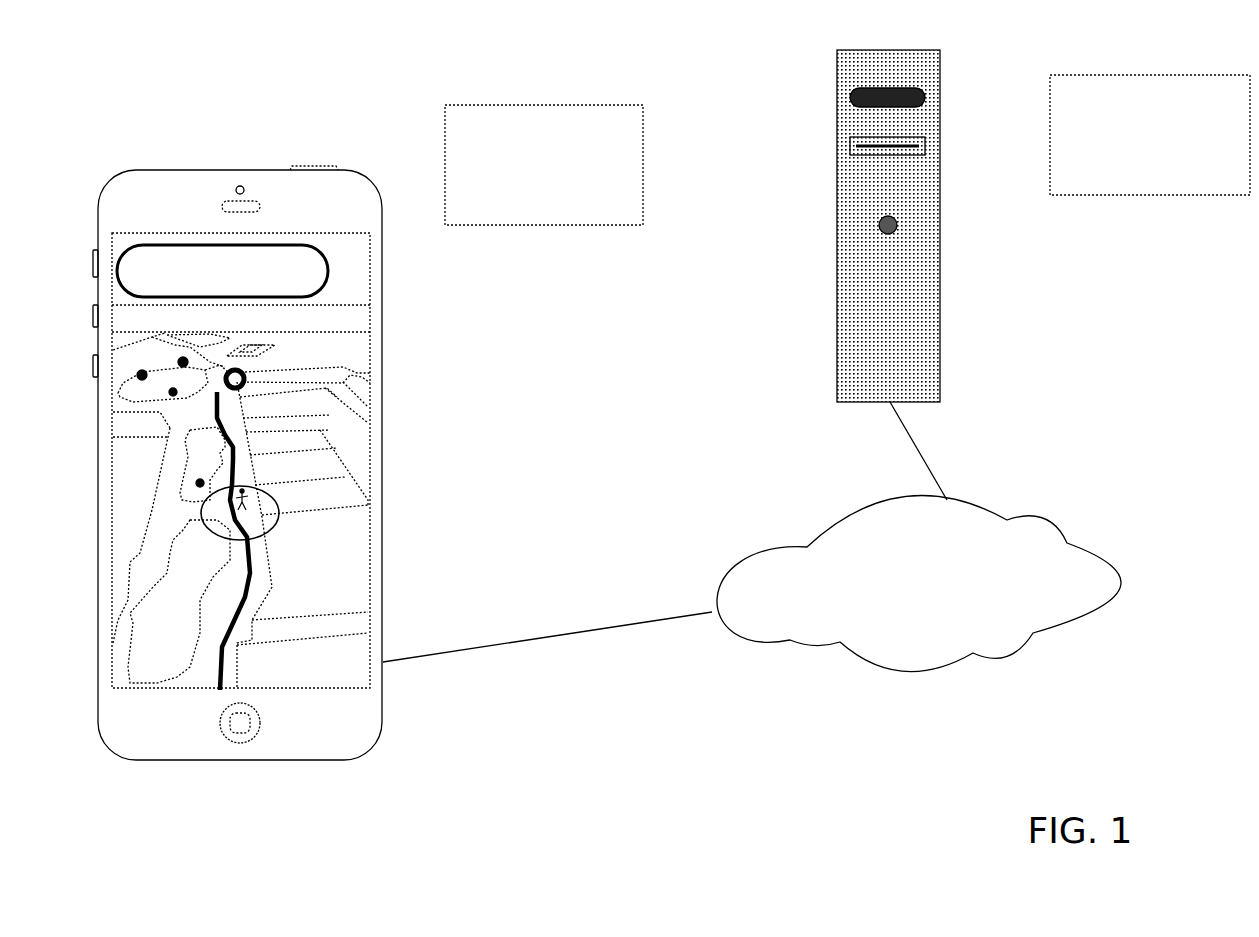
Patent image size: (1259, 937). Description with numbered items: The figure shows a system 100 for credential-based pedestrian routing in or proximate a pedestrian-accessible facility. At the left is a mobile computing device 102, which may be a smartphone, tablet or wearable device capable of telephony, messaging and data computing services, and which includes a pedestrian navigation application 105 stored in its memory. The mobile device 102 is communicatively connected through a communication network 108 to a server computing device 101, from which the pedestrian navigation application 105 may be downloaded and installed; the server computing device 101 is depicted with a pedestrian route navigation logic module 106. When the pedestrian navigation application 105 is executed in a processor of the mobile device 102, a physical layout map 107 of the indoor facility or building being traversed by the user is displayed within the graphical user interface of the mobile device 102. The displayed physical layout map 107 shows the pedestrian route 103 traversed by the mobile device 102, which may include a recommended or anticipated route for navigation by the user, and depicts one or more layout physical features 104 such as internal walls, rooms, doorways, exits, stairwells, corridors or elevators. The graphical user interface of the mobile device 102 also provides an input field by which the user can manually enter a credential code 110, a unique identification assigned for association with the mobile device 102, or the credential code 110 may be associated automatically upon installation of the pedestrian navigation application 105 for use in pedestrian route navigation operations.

The system 100 is at (597, 20).
The server computing device 101 is at (864, 314).
The mobile computing device 102 is at (372, 221).
The pedestrian route 103 is at (250, 572).
The layout physical feature 104 is at (347, 475).
The pedestrian navigation application 105 is at (383, 325).
The pedestrian route navigation logic module 106 is at (940, 223).
The physical layout map 107 is at (168, 654).
The communication network 108 is at (920, 620).
The credential code 110 is at (222, 243).